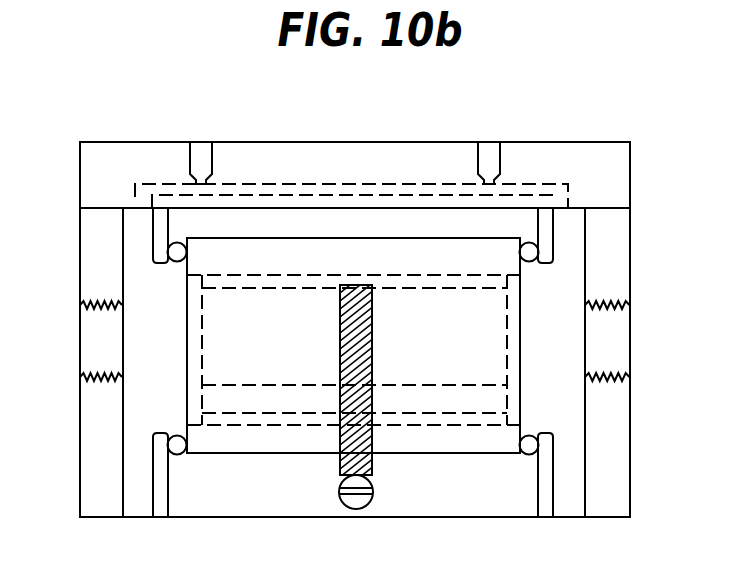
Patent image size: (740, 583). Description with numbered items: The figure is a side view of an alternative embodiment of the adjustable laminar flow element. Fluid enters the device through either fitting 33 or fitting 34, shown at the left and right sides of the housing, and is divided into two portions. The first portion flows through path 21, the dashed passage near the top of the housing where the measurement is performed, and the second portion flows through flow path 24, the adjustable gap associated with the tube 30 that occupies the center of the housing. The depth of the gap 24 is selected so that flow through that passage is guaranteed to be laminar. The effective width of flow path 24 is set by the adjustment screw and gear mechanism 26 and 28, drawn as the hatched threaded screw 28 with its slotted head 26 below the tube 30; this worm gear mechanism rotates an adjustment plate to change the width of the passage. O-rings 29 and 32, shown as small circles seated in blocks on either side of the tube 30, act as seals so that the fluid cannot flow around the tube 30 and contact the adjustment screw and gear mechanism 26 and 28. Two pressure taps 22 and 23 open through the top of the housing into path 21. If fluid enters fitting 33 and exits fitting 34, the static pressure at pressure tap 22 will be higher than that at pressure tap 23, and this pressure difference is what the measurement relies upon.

The path 21 is at (291, 182).
The pressure tap 22 is at (193, 139).
The pressure tap 23 is at (495, 141).
The flow path 24 is at (243, 279).
The worm gear mechanism 26 is at (337, 504).
The gear 28 is at (338, 442).
The O-ring 29 is at (167, 247).
The tube 30 is at (347, 236).
The O-ring 32 is at (537, 248).
The fitting 33 is at (101, 342).
The fitting 34 is at (617, 356).